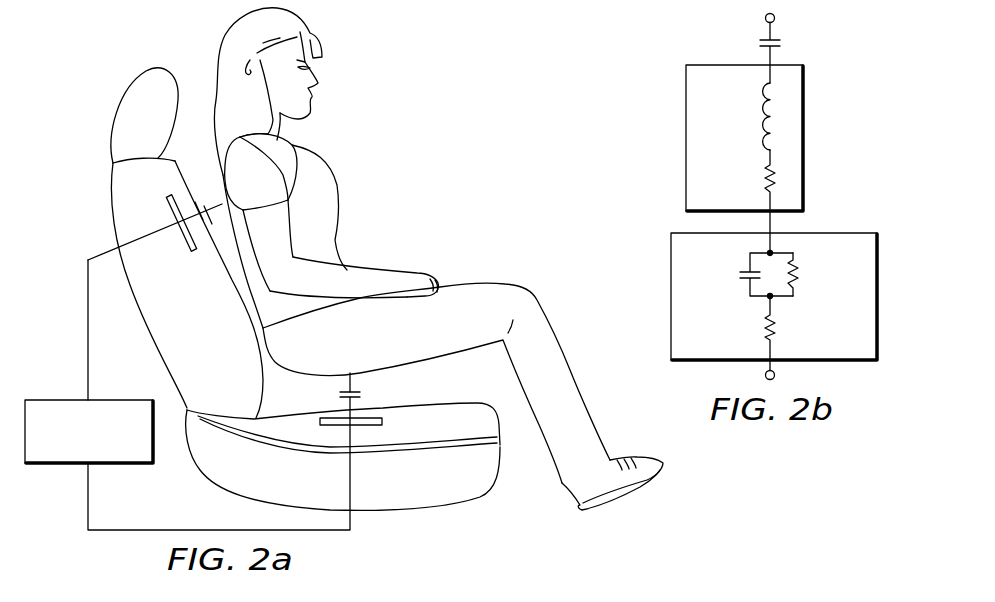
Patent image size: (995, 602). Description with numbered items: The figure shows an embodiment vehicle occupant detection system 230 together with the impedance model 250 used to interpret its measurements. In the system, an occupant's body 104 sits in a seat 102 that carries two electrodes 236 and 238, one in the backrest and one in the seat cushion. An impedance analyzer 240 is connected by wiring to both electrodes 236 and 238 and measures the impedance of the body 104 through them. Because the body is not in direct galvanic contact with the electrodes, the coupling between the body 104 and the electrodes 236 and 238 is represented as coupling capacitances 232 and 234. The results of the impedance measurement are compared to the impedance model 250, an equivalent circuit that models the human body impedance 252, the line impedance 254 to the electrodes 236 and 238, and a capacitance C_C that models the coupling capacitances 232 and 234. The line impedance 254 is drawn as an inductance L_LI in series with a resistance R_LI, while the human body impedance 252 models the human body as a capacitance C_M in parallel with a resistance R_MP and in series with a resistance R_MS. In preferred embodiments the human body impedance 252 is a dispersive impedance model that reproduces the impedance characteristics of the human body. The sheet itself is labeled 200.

In FIG. 2a, the vehicle occupant detection system 230 is at (100, 55).
In FIG. 2a, the body 104 is at (221, 43).
In FIG. 2a, the seat 102 is at (110, 210).
In FIG. 2a, the coupling capacitance 232 is at (199, 198).
In FIG. 2a, the electrode 236 is at (195, 254).
In FIG. 2a, the coupling capacitance 234 is at (362, 395).
In FIG. 2a, the electrode 238 is at (383, 422).
In FIG. 2a, the impedance analyzer 240 is at (58, 398).
In FIG. 2b, the impedance model 250 is at (640, 78).
In FIG. 2b, the line impedance 254 is at (804, 107).
In FIG. 2b, the human body impedance 252 is at (843, 231).
In FIG. 2b, the sheet 200 is at (842, 594).